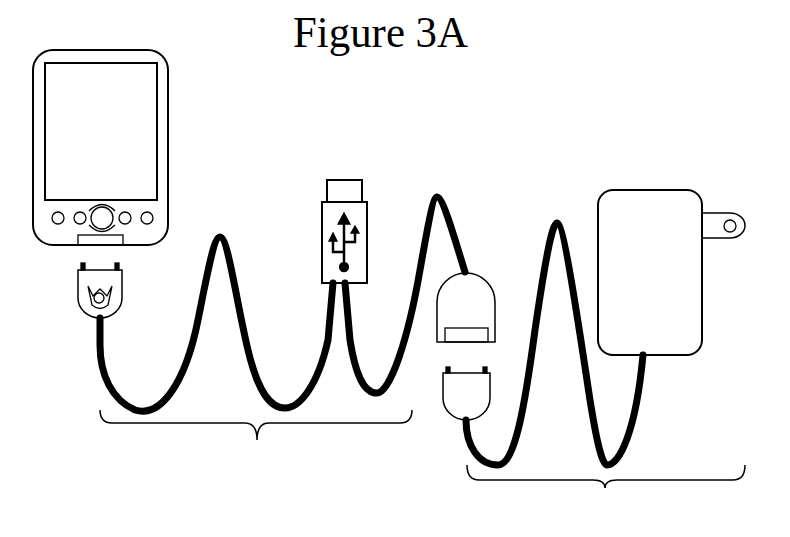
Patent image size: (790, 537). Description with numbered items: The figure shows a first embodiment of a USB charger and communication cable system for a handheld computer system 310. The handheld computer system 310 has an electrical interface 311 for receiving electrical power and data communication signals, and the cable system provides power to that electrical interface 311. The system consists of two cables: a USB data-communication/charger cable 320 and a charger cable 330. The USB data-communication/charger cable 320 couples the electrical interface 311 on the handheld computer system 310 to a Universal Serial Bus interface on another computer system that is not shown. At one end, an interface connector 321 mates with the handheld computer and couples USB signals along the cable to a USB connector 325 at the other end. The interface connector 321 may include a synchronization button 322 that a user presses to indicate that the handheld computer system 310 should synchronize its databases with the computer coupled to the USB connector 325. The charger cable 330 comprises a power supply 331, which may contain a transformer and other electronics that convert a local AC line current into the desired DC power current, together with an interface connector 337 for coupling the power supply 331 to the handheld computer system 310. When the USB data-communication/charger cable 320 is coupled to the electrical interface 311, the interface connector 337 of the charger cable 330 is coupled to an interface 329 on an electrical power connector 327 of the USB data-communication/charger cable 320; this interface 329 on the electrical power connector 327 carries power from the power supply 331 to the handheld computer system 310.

The handheld computer system 310 is at (100, 147).
The electrical interface 311 is at (100, 242).
The USB data-communication/charger cable 320 is at (282, 333).
The interface connector 321 is at (124, 291).
The synchronization button 322 is at (92, 300).
The USB connector 325 is at (318, 225).
The electrical power connector 327 is at (478, 275).
The interface 329 is at (465, 336).
The charger cable 330 is at (605, 372).
The power supply 331 is at (671, 272).
The interface connector 337 is at (466, 393).